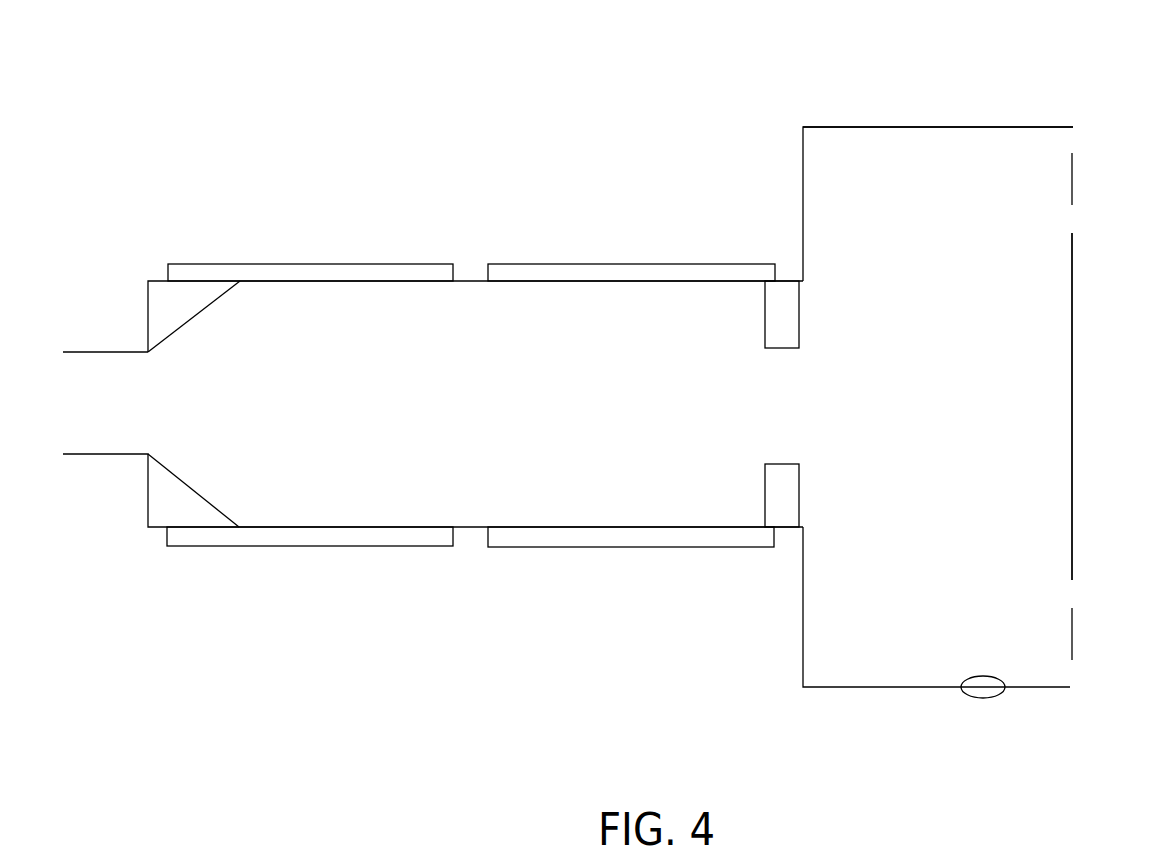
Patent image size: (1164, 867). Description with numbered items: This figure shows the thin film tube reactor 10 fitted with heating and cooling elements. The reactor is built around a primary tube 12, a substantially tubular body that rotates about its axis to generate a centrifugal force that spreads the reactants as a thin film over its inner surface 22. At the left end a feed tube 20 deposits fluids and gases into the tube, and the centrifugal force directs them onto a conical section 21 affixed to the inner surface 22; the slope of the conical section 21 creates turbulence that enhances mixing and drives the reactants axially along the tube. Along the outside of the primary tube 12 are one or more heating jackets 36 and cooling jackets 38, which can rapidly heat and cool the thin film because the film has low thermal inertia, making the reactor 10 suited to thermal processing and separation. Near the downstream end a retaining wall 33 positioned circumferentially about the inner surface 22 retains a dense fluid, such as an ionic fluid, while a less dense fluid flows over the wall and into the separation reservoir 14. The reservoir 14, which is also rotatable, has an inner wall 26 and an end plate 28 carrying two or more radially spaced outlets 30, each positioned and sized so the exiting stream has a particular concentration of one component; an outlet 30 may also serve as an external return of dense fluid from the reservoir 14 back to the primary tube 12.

The tube reactor 10 is at (518, 117).
The primary tube 12 is at (470, 533).
The separation reservoir 14 is at (913, 127).
The feed tube 20 is at (100, 456).
The conical section 21 is at (203, 308).
The inner surface 22 is at (470, 283).
The inner wall 26 is at (1002, 129).
The end plate 28 is at (1073, 343).
The outlets 30 is at (1073, 142).
The retaining wall 33 is at (765, 310).
The heating jackets 36 is at (370, 264).
The cooling jackets 38 is at (600, 264).